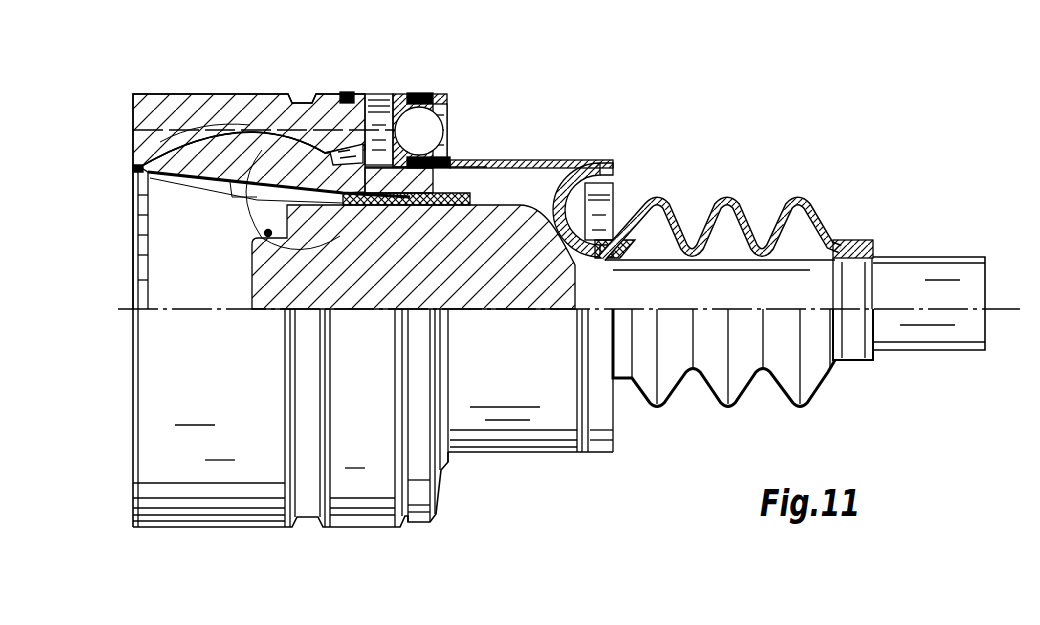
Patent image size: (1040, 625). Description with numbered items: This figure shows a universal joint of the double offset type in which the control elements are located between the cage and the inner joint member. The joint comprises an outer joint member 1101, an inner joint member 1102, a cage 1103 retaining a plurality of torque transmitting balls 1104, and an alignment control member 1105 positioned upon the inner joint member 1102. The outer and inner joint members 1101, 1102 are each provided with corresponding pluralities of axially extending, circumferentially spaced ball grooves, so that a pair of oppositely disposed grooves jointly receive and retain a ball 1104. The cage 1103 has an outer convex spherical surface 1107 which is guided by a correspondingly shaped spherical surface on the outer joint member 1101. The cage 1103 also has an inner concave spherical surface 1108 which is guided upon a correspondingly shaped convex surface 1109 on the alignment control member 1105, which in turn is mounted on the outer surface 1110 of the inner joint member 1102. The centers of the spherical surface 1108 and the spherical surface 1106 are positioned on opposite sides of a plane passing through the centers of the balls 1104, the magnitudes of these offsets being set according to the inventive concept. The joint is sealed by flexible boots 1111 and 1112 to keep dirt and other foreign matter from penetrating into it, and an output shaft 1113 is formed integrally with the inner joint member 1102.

The outer joint member 1101 is at (253, 115).
The inner joint member 1102 is at (353, 250).
The cage 1103 is at (208, 147).
The torque transmitting balls 1104 is at (348, 160).
The alignment control member 1105 is at (430, 205).
The spherical surface 1106 is at (178, 143).
The outer convex spherical surface 1107 is at (133, 169).
The inner concave spherical surface 1108 is at (437, 200).
The convex surface 1109 is at (487, 163).
The outer surface 1110 is at (483, 203).
The flexible boot 1111 is at (395, 140).
The flexible boot 1112 is at (733, 203).
The output shaft 1113 is at (917, 282).